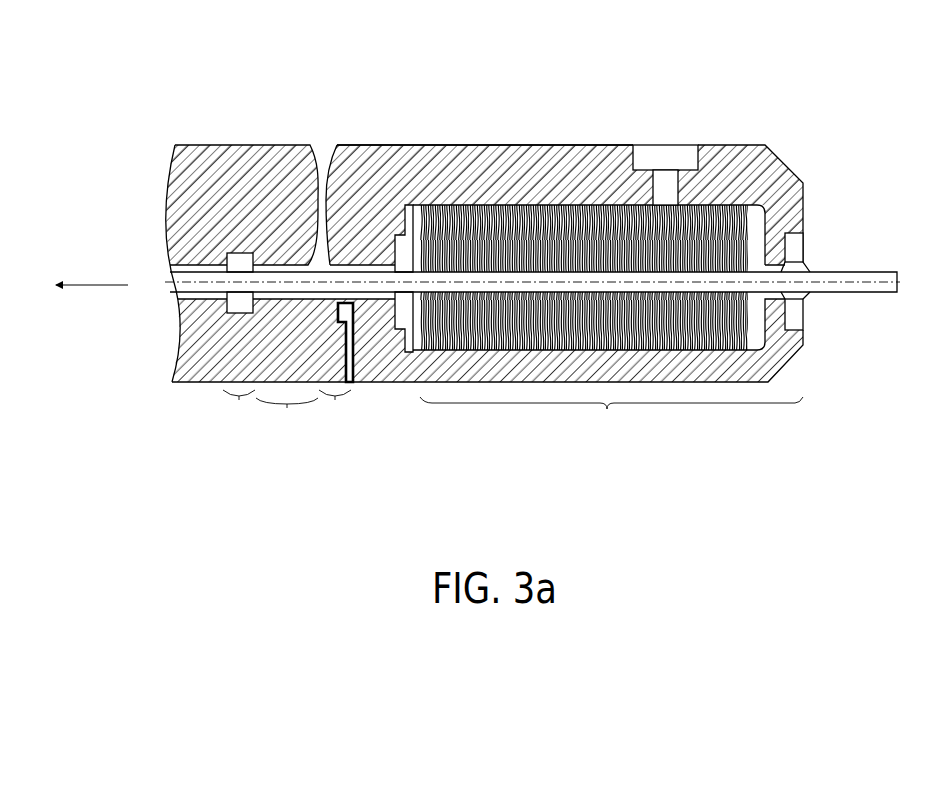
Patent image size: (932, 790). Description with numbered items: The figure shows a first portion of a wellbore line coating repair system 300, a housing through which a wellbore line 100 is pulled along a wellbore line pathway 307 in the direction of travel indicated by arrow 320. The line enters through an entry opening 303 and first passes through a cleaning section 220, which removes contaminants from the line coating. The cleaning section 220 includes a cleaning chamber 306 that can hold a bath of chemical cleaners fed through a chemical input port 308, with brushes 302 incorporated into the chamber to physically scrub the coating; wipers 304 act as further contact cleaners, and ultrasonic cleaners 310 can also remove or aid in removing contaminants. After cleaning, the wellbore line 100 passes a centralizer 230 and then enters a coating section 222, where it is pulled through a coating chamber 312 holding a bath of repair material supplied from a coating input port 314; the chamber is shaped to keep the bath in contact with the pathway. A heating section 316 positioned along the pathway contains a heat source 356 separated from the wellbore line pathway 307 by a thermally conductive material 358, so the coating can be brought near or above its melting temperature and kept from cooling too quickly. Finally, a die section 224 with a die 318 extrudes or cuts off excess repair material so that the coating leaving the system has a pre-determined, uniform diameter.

The wellbore line 100 is at (877, 272).
The cleaning section 220 is at (611, 414).
The coating section 222 is at (287, 411).
The die section 224 is at (239, 403).
The centralizer 230 is at (347, 255).
The wellbore line coating repair system 300 is at (136, 101).
The brushes 302 is at (708, 203).
The entry opening 303 is at (822, 254).
The wipers 304 is at (792, 244).
The cleaning chamber 306 is at (480, 205).
The wellbore line pathway 307 is at (545, 146).
The chemical input port 308 is at (654, 142).
The ultrasonic cleaners 310 is at (405, 230).
The coating chamber 312 is at (228, 303).
The coating input port 314 is at (316, 149).
The heating section 316 is at (335, 403).
The die 318 is at (240, 252).
The arrow 320 is at (113, 284).
The heat source 356 is at (357, 335).
The thermally conductive material 358 is at (356, 301).